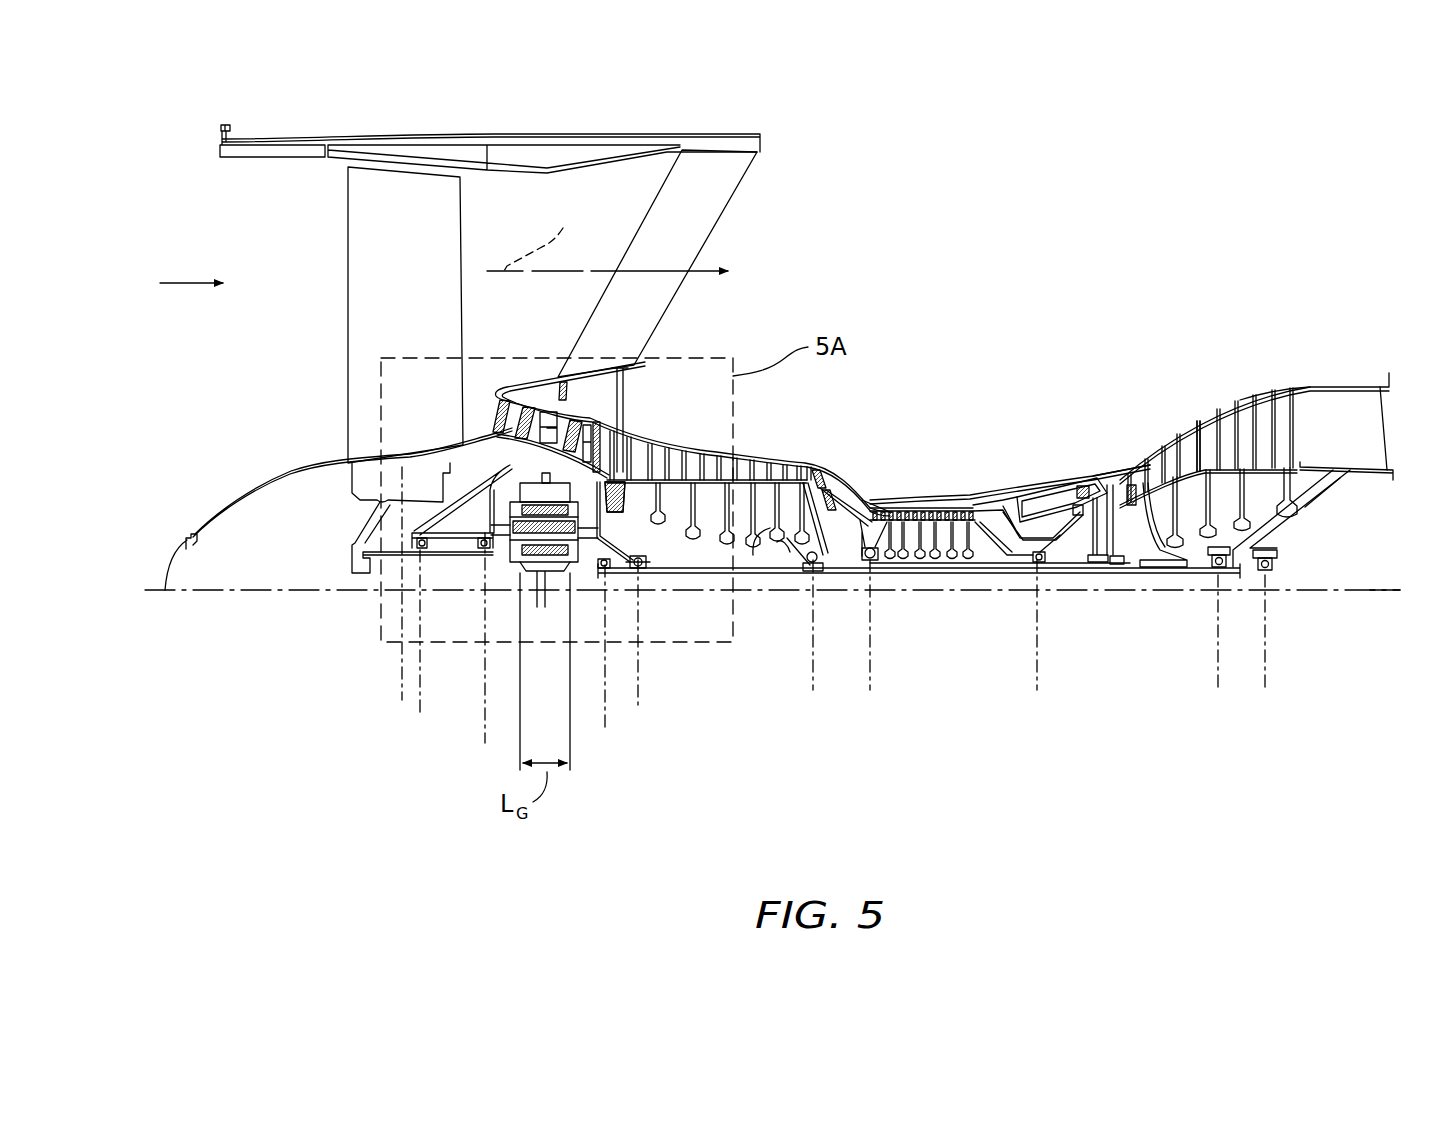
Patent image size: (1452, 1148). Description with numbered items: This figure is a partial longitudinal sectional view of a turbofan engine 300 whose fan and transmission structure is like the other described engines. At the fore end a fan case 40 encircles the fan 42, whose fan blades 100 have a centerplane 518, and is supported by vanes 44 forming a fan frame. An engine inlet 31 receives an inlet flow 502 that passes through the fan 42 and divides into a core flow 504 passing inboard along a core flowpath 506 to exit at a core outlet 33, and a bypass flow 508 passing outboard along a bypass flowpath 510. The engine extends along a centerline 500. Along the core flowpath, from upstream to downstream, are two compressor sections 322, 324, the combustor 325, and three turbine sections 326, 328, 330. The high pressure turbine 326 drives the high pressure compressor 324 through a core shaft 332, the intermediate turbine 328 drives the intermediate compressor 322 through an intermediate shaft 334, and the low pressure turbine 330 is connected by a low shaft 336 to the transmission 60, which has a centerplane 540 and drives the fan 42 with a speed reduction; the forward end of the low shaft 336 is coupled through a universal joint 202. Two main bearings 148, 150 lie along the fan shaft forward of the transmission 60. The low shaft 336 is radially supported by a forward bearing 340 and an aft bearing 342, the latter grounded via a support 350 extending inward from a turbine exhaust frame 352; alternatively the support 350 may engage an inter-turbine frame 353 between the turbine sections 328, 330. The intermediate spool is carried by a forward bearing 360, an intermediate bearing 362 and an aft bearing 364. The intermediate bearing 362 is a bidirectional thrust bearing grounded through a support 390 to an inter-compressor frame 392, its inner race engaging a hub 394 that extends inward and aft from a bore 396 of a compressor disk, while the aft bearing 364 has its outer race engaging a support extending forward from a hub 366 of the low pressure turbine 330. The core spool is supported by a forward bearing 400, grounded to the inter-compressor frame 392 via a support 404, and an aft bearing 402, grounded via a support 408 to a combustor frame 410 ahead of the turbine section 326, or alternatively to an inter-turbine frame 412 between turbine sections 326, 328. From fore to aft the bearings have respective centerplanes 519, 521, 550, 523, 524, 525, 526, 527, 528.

The engine inlet 31 is at (206, 199).
The fan case 40 is at (573, 132).
The vanes 44 is at (712, 205).
The fan 42 is at (336, 432).
The fan blades 100 is at (360, 338).
The turbofan engine 300 is at (1128, 227).
The inlet flow 502 is at (192, 283).
The bypass flow 508 is at (722, 268).
The bypass flowpath 510 is at (545, 234).
The transmission 60 is at (509, 574).
The main bearing 148 is at (419, 552).
The main bearing 150 is at (482, 552).
The universal joint 202 is at (596, 604).
The compressor section 322 is at (716, 445).
The compressor section 324 is at (945, 492).
The combustor 325 is at (1046, 496).
The turbine section 326 is at (1121, 481).
The turbine section 328 is at (1174, 455).
The turbine section 330 is at (1273, 418).
The core shaft 332 is at (1012, 552).
The intermediate shaft 334 is at (860, 555).
The low shaft 336 is at (1163, 585).
The forward bearing 340 is at (650, 567).
The aft bearing 342 is at (1271, 572).
The support 350 is at (1320, 510).
The frame 352 is at (1366, 427).
The inter-turbine frame 353 is at (1191, 449).
The forward bearing 360 is at (652, 580).
The intermediate bearing 362 is at (818, 573).
The aft bearing 364 is at (1212, 570).
The hub 366 is at (1265, 503).
The support 390 is at (843, 503).
The inter-compressor frame 392 is at (865, 505).
The hub 394 is at (781, 556).
The bore 396 is at (753, 556).
The bearing 400 is at (871, 565).
The aft bearing 402 is at (1069, 544).
The support 404 is at (929, 498).
The support 408 is at (1045, 564).
The combustor frame 410 is at (1093, 482).
The inter-turbine frame 412 is at (1122, 566).
The centerline 500 is at (1376, 593).
The core flow 504 is at (526, 423).
The core flowpath 506 is at (590, 405).
The centerplane 518 is at (402, 683).
The bearing centerplane 519 is at (420, 717).
The bearing centerplane 521 is at (485, 740).
The bearing centerplane 523 is at (638, 703).
The bearing centerplane 524 is at (813, 688).
The bearing centerplane 525 is at (870, 688).
The bearing centerplane 526 is at (1037, 688).
The bearing centerplane 527 is at (1218, 688).
The bearing centerplane 528 is at (1265, 688).
The centerplane 540 is at (543, 668).
The bearing centerplane 550 is at (605, 727).
The core outlet 33 is at (1399, 456).